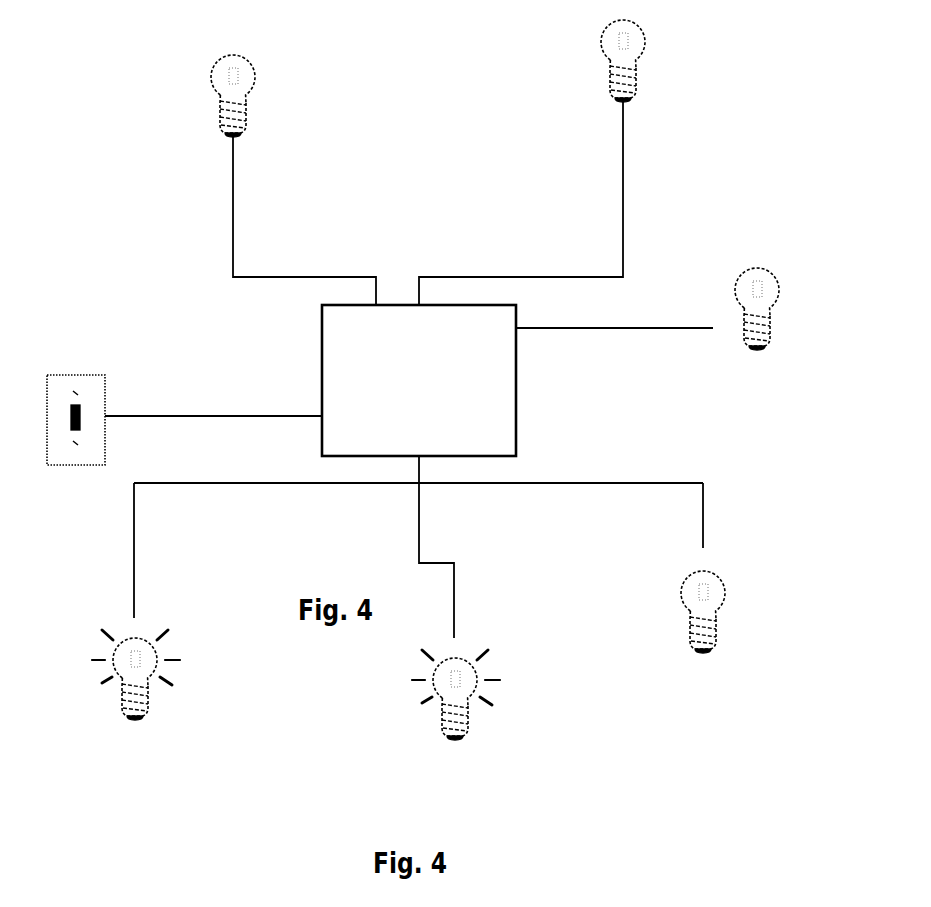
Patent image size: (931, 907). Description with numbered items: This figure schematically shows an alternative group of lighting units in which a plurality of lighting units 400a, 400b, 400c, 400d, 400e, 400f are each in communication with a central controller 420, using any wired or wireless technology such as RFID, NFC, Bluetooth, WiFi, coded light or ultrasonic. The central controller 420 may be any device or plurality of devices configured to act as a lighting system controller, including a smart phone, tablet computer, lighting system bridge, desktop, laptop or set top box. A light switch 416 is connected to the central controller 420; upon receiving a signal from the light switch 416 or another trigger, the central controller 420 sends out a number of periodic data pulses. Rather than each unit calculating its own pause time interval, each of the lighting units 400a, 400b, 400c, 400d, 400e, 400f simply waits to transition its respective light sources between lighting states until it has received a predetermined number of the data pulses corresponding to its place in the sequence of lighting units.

The lighting unit 400a is at (136, 691).
The lighting unit 400b is at (456, 711).
The lighting unit 400c is at (703, 628).
The lighting unit 400d is at (757, 325).
The lighting unit 400e is at (623, 78).
The lighting unit 400f is at (233, 111).
The light switch 416 is at (105, 401).
The central controller 420 is at (402, 421).